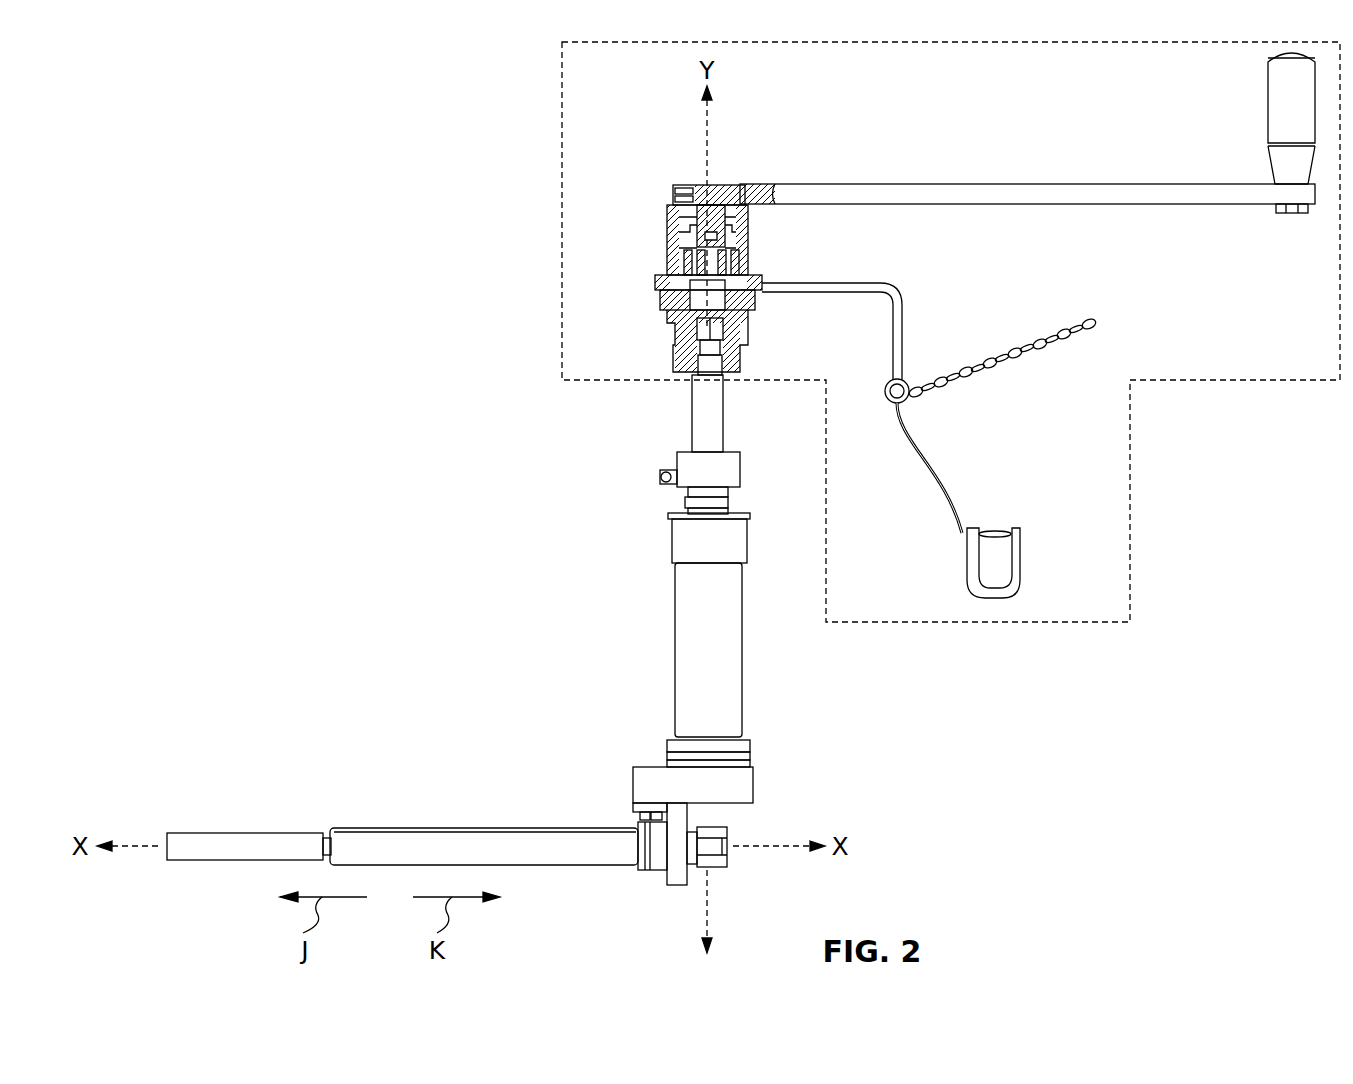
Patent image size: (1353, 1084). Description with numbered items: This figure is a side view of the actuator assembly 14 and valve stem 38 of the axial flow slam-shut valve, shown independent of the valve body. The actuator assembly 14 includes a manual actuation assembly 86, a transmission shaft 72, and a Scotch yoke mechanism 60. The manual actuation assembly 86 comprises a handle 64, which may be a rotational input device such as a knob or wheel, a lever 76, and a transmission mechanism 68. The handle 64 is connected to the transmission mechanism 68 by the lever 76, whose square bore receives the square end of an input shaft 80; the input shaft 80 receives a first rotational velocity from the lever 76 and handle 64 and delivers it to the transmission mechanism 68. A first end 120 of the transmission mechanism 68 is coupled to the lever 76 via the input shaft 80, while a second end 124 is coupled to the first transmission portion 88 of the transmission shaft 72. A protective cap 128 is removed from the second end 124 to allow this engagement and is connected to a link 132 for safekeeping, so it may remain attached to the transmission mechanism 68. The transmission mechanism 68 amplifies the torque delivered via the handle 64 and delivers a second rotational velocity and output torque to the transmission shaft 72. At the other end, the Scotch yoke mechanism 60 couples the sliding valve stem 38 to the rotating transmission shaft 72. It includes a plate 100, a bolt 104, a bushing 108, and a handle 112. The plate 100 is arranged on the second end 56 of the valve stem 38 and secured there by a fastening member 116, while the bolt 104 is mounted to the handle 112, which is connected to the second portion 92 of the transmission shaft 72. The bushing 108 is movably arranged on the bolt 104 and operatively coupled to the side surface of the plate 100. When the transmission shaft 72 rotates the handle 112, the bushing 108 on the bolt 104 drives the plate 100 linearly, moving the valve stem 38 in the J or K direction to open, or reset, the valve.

The actuator assembly 14 is at (300, 227).
The valve stem 38 is at (388, 828).
The second end 56 is at (567, 865).
The Scotch yoke mechanism 60 is at (853, 810).
The handle 64 is at (1268, 92).
The transmission mechanism 68 is at (758, 262).
The transmission shaft 72 is at (743, 638).
The lever 76 is at (973, 184).
The input shaft 80 is at (708, 185).
The manual actuation assembly 86 is at (560, 277).
The first transmission portion 88 is at (690, 422).
The second portion 92 is at (752, 744).
The plate 100 is at (680, 887).
The bolt 104 is at (652, 866).
The bushing 108 is at (638, 818).
The handle 112 is at (755, 785).
The fastening member 116 is at (725, 830).
The first end 120 is at (667, 227).
The second end 124 is at (732, 378).
The protective cap 128 is at (1023, 563).
The link 132 is at (923, 457).